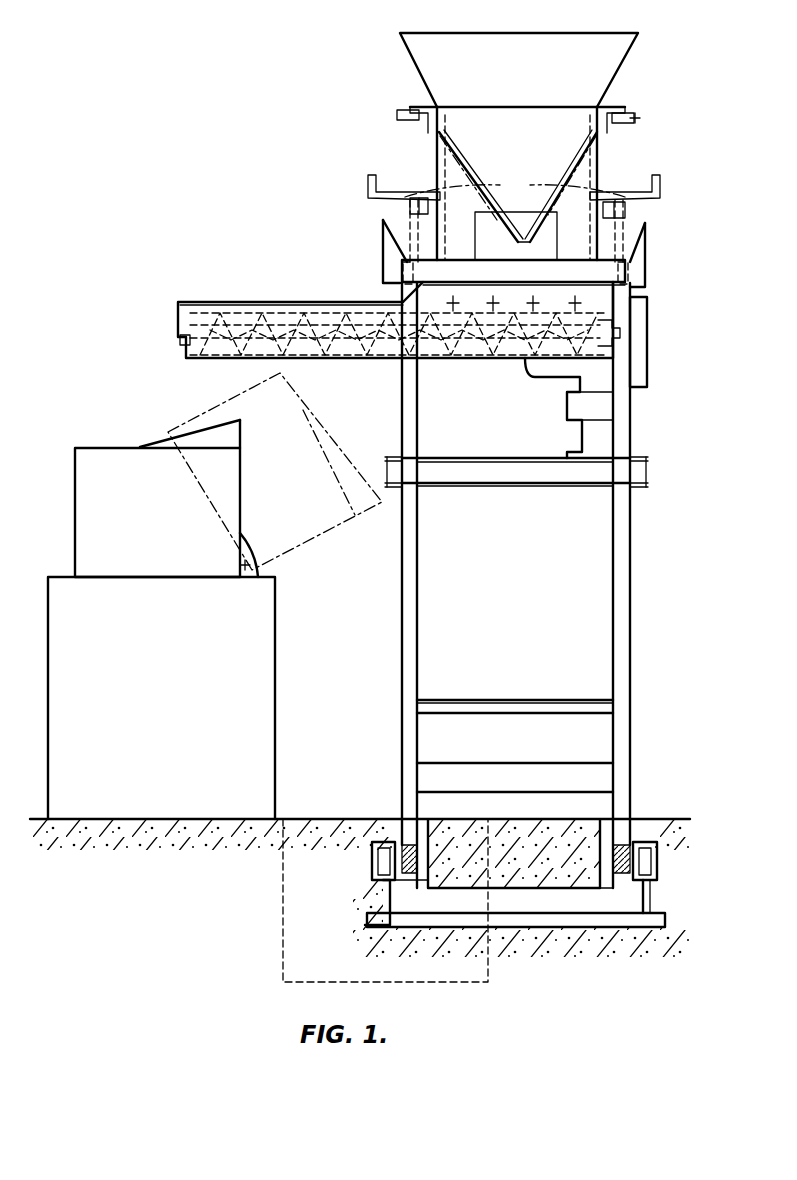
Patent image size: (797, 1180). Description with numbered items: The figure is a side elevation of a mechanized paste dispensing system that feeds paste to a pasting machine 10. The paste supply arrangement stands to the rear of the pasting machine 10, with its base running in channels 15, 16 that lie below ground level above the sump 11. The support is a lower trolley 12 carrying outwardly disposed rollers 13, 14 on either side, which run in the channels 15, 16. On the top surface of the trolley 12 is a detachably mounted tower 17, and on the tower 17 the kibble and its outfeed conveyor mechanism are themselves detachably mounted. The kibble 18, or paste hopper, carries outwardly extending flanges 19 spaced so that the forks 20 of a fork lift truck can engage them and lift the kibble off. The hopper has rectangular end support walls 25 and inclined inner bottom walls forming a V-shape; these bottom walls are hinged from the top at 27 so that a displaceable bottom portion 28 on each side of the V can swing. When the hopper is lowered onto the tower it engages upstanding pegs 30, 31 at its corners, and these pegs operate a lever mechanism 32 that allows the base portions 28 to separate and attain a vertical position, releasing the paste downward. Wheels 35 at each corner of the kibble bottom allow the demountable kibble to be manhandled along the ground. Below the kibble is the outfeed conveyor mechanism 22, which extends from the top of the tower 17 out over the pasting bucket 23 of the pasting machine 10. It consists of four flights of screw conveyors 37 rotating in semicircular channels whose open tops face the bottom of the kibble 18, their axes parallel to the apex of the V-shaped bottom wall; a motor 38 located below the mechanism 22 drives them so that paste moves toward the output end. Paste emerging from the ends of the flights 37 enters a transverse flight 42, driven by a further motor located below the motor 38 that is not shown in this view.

The pasting machine 10 is at (298, 690).
The sump 11 is at (280, 906).
The lower trolley 12 is at (640, 813).
The roller 13 is at (658, 860).
The roller 14 is at (380, 862).
The channel 15 is at (641, 880).
The channel 16 is at (392, 874).
The tower 17 is at (620, 550).
The kibble 18 is at (612, 92).
The flange 19 is at (615, 105).
The fork 20 is at (397, 115).
The outfeed conveyor mechanism 22 is at (234, 300).
The pasting bucket 23 is at (105, 453).
The rectangular end support wall 25 is at (605, 143).
The hinge 27 is at (437, 136).
The displaceable bottom portion 28 is at (531, 216).
The upstanding peg 30 is at (630, 211).
The upstanding peg 31 is at (408, 209).
The lever mechanism 32 is at (368, 182).
The wheel 35 is at (400, 268).
The screw conveyor flight 37 is at (455, 312).
The motor 38 is at (592, 381).
The transverse flight 42 is at (358, 360).